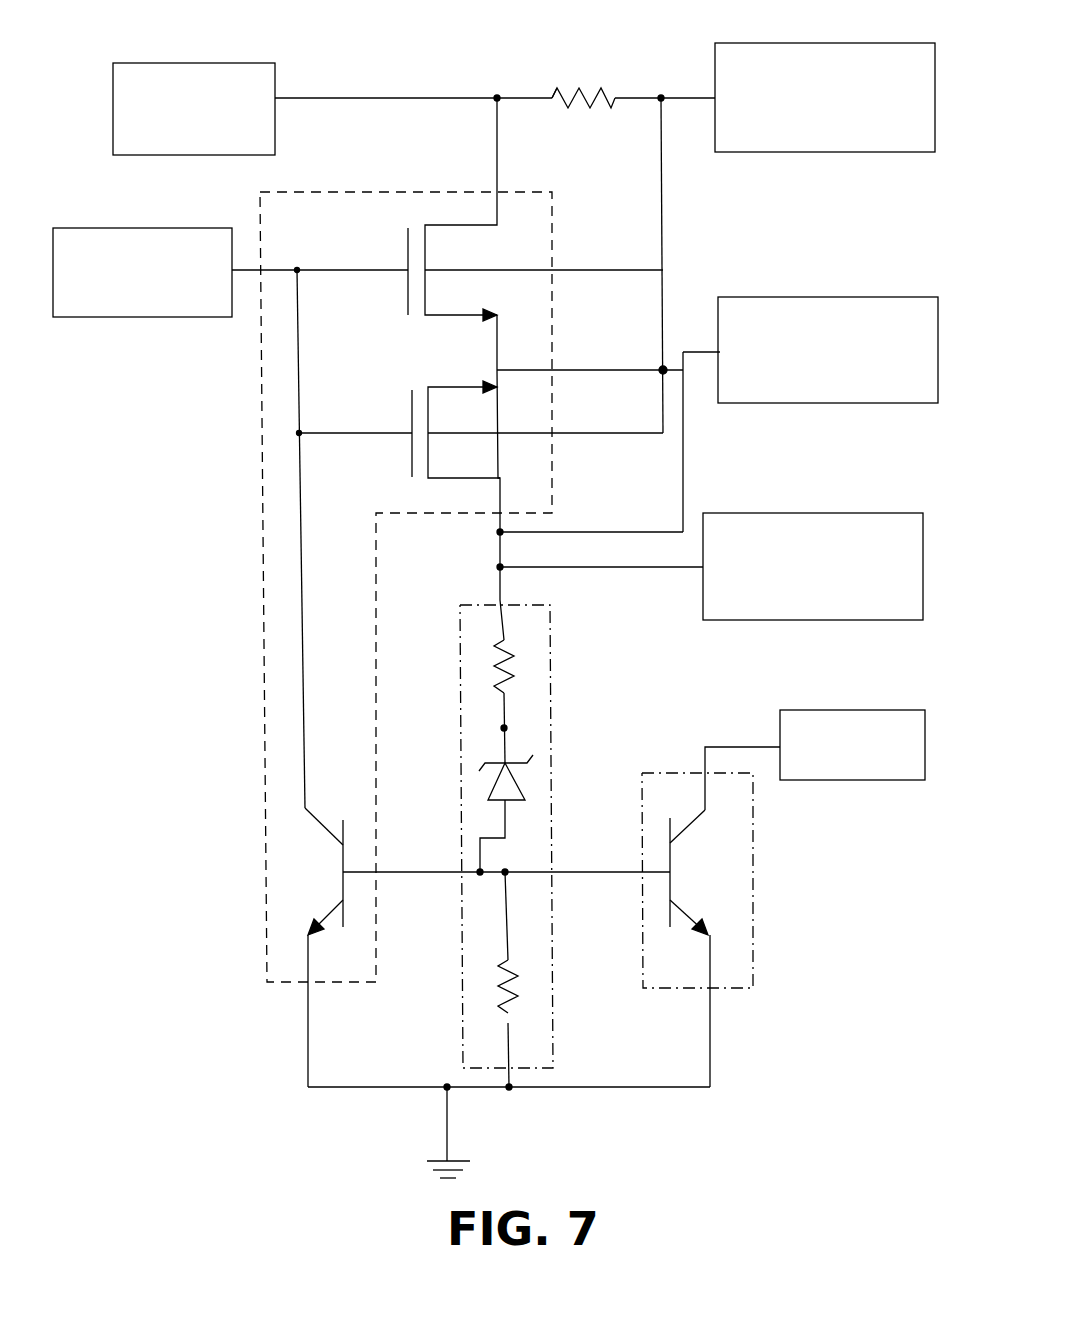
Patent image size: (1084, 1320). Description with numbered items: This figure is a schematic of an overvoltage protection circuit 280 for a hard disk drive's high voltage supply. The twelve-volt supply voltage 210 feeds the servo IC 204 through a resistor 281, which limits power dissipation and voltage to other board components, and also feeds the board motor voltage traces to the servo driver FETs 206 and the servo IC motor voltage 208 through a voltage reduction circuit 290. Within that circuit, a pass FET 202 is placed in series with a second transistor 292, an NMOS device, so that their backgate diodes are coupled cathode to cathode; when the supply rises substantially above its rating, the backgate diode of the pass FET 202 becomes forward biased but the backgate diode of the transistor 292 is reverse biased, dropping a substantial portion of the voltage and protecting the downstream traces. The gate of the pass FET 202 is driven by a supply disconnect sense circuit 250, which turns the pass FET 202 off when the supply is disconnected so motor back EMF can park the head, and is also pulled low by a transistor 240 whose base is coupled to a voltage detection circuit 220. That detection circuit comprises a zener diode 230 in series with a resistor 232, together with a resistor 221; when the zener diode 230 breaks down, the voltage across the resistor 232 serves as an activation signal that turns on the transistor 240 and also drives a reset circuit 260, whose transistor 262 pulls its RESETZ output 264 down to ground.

The pass FET 202 is at (481, 228).
The servo IC 204 is at (826, 43).
The servo driver FETs 206 is at (838, 297).
The servo IC motor voltage 208 is at (835, 513).
The 12V supply voltage 210 is at (202, 63).
The voltage detection circuit 220 is at (552, 688).
The resistor 221 is at (508, 665).
The zener diode 230 is at (518, 782).
The resistor 232 is at (505, 1020).
The transistor 240 is at (337, 910).
The supply disconnect sense circuit 250 is at (152, 317).
The reset circuit 260 is at (755, 940).
The transistor 262 is at (738, 826).
The output 264 is at (873, 710).
The overvoltage protection circuit 280 is at (557, 44).
The resistor 281 is at (554, 86).
The voltage reduction circuit 290 is at (374, 192).
The second transistor 292 is at (463, 392).